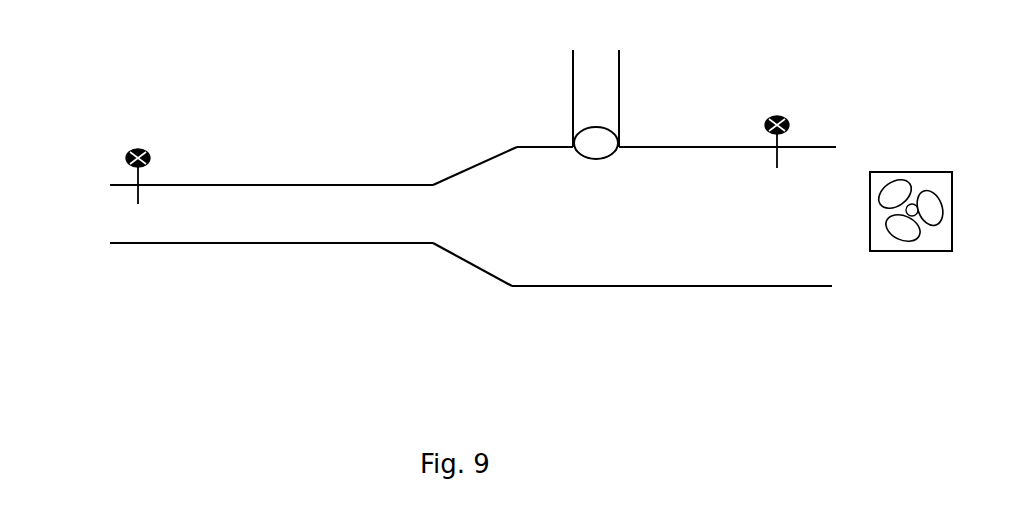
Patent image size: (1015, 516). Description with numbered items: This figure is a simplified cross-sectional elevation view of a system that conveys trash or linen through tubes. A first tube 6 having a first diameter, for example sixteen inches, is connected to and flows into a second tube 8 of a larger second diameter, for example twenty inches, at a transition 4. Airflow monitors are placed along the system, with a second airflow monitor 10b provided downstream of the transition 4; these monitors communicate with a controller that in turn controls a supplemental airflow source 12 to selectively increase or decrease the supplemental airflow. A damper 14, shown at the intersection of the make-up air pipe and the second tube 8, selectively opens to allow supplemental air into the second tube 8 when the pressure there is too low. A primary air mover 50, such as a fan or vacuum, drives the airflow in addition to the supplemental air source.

The transition 4 is at (479, 230).
The first tube 6 is at (210, 214).
The second tube 8 is at (683, 270).
The second airflow monitor 10b is at (136, 142).
The supplemental airflow source 12 is at (581, 97).
The damper 14 is at (568, 143).
The primary air mover 50 is at (916, 172).